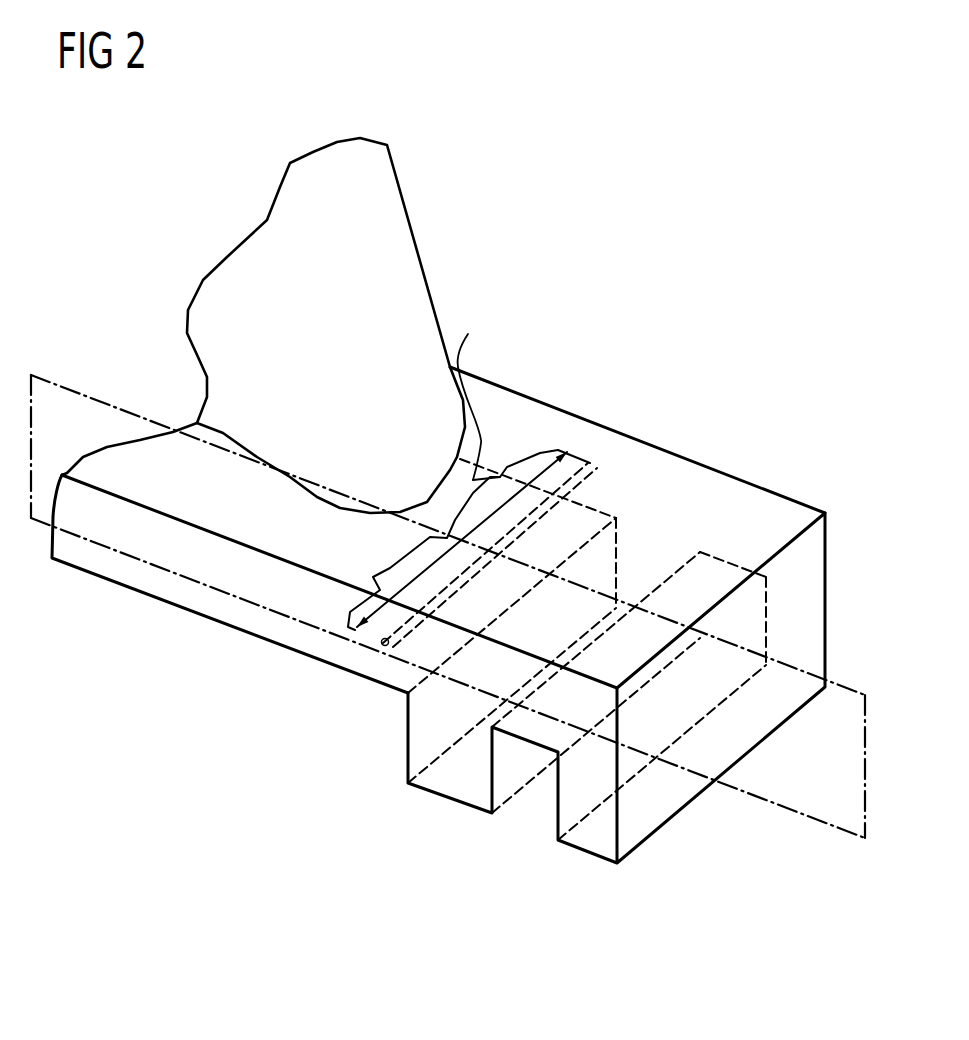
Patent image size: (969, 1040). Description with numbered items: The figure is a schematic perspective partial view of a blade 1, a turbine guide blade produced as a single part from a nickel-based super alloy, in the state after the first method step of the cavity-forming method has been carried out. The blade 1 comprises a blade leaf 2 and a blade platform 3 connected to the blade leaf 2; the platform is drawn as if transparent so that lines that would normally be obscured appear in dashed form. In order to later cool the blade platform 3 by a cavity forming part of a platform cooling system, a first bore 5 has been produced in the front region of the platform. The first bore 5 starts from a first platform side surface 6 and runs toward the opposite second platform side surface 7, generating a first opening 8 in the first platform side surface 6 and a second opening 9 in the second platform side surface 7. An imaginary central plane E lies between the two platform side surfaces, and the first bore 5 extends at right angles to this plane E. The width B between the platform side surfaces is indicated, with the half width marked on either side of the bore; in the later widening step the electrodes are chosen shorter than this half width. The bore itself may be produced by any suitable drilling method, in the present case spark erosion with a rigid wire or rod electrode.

The blade 1 is at (563, 240).
The blade leaf 2 is at (388, 234).
The blade platform 3 is at (492, 412).
The first bore 5 is at (575, 485).
The first platform side surface 6 is at (230, 607).
The second platform side surface 7 is at (653, 456).
The first opening 8 is at (385, 647).
The second opening 9 is at (593, 462).
The width B is at (533, 468).
The imaginary central plane E is at (790, 793).